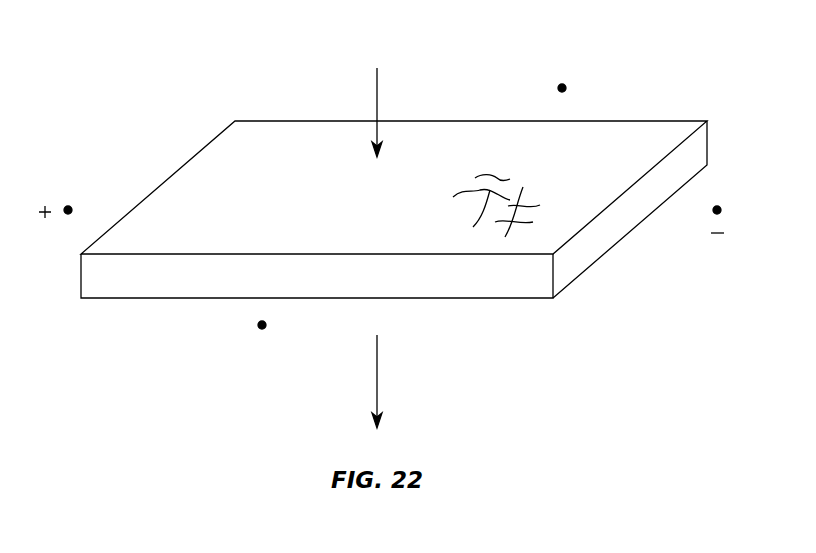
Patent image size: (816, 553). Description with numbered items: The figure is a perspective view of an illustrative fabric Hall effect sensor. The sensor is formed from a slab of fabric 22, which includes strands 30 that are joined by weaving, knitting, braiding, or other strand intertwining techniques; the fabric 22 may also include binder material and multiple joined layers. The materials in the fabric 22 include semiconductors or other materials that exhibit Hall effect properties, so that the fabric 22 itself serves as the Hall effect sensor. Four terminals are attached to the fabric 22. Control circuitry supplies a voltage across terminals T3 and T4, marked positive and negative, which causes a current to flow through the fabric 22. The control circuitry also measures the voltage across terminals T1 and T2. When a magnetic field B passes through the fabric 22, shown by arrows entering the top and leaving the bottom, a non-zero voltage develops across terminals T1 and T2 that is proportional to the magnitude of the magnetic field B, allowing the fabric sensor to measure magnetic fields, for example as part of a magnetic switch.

The fabric 22 is at (112, 298).
The strands 30 is at (463, 190).
The magnetic field B is at (376, 232).
The terminal T1 is at (318, 275).
The terminal T2 is at (527, 120).
The terminal T3 is at (134, 208).
The terminal T4 is at (628, 210).